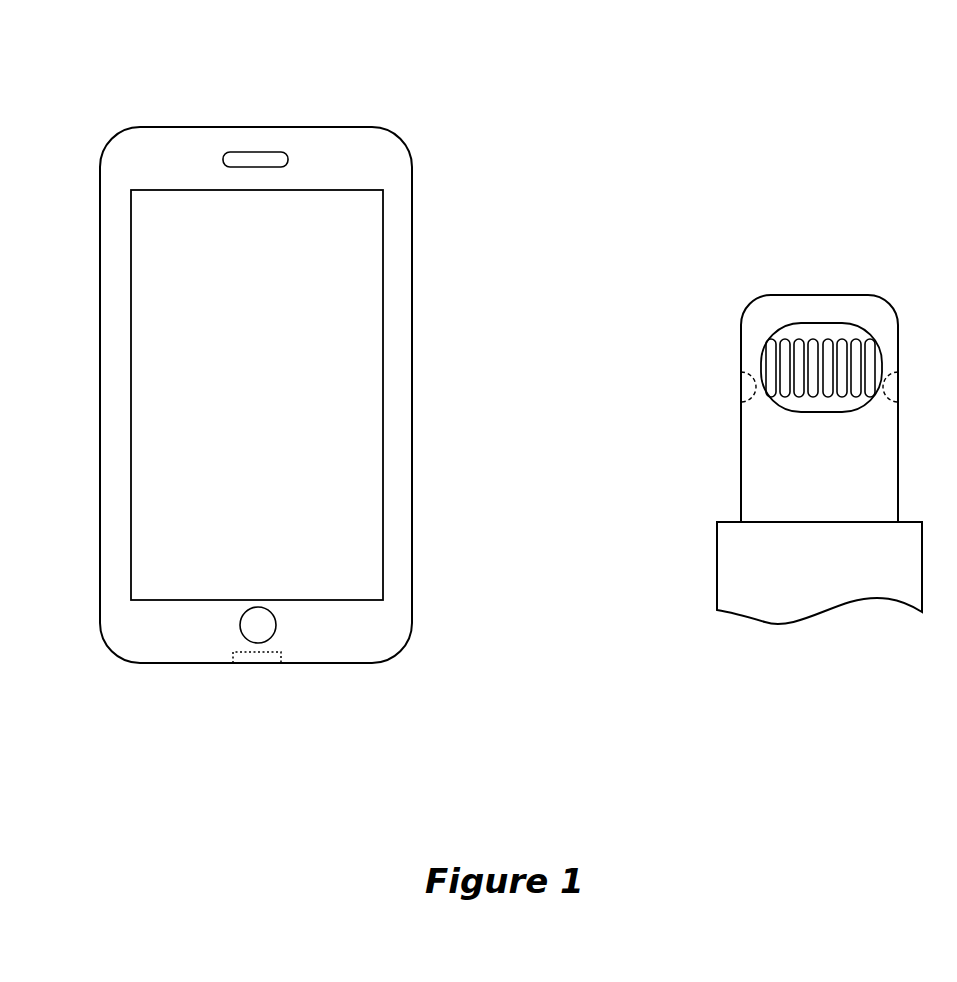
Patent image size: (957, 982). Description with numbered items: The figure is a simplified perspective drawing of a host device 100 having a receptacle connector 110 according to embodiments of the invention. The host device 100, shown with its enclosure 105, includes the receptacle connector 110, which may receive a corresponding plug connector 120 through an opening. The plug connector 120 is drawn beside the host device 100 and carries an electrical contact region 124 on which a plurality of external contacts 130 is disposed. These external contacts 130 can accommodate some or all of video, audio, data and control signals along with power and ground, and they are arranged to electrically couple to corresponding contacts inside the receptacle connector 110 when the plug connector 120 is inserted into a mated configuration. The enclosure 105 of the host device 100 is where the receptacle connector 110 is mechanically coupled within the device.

The host device 100 is at (348, 108).
The enclosure 105 is at (391, 322).
The receptacle connector 110 is at (272, 663).
The plug connector 120 is at (719, 310).
The electrical contact region 124 is at (793, 403).
The external contacts 130 is at (856, 347).